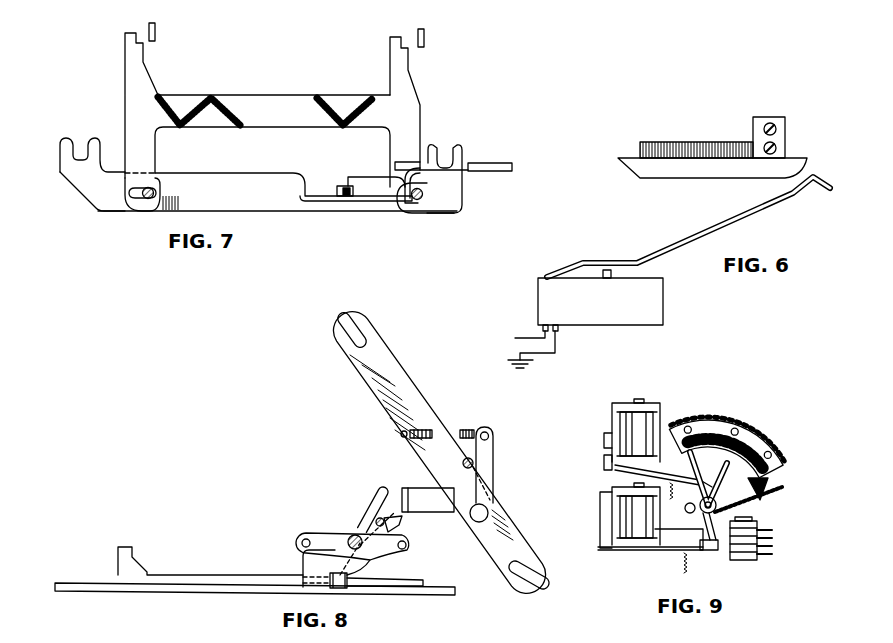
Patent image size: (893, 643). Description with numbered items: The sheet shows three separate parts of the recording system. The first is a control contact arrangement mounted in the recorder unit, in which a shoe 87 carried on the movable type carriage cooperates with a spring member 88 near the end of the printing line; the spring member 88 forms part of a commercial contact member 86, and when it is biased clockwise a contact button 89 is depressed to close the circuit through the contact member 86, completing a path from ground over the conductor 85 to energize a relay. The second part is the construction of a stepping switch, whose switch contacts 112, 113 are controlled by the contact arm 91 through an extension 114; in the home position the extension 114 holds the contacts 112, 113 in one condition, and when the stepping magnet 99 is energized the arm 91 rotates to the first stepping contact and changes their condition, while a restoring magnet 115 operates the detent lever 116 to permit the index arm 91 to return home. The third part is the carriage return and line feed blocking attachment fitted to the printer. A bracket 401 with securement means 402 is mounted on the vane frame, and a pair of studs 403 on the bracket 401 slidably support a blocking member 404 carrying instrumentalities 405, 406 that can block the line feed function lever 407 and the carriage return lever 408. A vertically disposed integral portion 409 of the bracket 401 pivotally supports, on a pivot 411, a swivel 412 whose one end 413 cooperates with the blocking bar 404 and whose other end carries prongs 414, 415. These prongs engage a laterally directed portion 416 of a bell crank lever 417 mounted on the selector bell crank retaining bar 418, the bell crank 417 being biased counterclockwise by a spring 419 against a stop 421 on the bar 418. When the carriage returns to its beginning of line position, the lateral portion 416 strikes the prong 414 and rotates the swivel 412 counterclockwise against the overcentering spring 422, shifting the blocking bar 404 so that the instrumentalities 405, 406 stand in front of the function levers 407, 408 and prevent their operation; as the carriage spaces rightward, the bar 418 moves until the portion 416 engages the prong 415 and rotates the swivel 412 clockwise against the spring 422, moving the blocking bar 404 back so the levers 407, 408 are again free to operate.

In FIG. 6, the conductor 85 is at (528, 338).
In FIG. 6, the contact member 86 is at (660, 298).
In FIG. 6, the shoe 87 is at (678, 172).
In FIG. 6, the spring member 88 is at (703, 232).
In FIG. 6, the contact button 89 is at (612, 270).
In FIG. 9, the contact arm 91 is at (680, 458).
In FIG. 9, the stepping magnet 99 is at (630, 518).
In FIG. 9, the switch contact 112 is at (757, 528).
In FIG. 9, the switch contact 113 is at (757, 549).
In FIG. 9, the extension 114 is at (715, 513).
In FIG. 9, the restoring magnet 115 is at (625, 430).
In FIG. 9, the detent lever 116 is at (637, 470).
In FIG. 7, the bracket 401 is at (265, 203).
In FIG. 8, the bracket 401 is at (185, 589).
In FIG. 7, the securement means 402 is at (75, 143).
In FIG. 7, the studs 403 is at (145, 199).
In FIG. 7, the blocking member 404 is at (295, 100).
In FIG. 8, the blocking member 404 is at (228, 580).
In FIG. 7, the blocking instrumentality 405 is at (124, 36).
In FIG. 7, the blocking instrumentality 406 is at (390, 41).
In FIG. 7, the line feed function lever 407 is at (156, 31).
In FIG. 7, the carriage return lever 408 is at (424, 35).
In FIG. 8, the vertically disposed integral portion 409 is at (310, 567).
In FIG. 8, the pivot 411 is at (348, 540).
In FIG. 8, the swivel 412 is at (360, 506).
In FIG. 7, the swivel end 413 is at (357, 184).
In FIG. 8, the swivel end 413 is at (347, 578).
In FIG. 8, the prong 414 is at (378, 492).
In FIG. 8, the prong 415 is at (397, 529).
In FIG. 7, the laterally directed portion 416 is at (421, 176).
In FIG. 8, the laterally directed portion 416 is at (406, 488).
In FIG. 7, the bell crank lever 417 is at (475, 173).
In FIG. 8, the bell crank lever 417 is at (488, 493).
In FIG. 8, the selector bell crank retaining bar 418 is at (362, 372).
In FIG. 8, the spring 419 is at (470, 432).
In FIG. 8, the stop 421 is at (477, 462).
In FIG. 8, the overcentering spring 422 is at (360, 538).